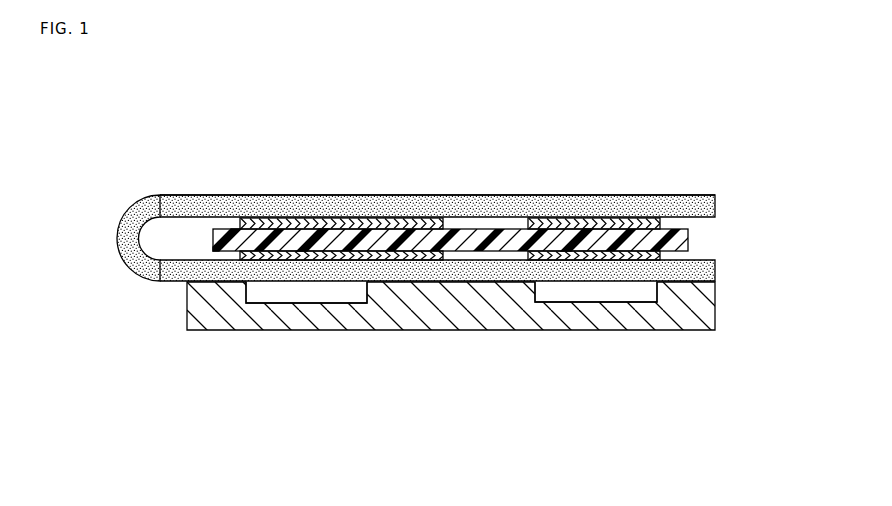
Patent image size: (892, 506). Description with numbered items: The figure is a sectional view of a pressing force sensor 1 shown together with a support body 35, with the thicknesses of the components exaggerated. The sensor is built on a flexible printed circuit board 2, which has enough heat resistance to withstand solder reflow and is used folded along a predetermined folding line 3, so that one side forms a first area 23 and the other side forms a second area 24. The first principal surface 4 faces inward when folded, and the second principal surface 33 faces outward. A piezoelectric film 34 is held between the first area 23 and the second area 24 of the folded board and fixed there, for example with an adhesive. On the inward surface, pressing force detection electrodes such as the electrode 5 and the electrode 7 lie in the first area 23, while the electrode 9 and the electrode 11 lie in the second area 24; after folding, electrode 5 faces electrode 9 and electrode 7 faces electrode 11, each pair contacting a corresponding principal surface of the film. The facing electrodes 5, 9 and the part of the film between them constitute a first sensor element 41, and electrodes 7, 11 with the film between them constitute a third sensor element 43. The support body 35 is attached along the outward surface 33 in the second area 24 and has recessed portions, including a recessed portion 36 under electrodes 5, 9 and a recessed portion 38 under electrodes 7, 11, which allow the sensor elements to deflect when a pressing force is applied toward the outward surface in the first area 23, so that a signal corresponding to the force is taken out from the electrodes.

The pressing force sensor 1 is at (196, 193).
The flexible printed circuit board 2 is at (806, 186).
The folding line 3 is at (116, 234).
The first principal surface 4 is at (443, 222).
The pressing force detection electrode 5 is at (572, 222).
The pressing force detection electrode 7 is at (331, 229).
The pressing force detection electrode 9 is at (570, 262).
The pressing force detection electrode 11 is at (337, 218).
The first area 23 is at (718, 203).
The second area 24 is at (718, 262).
The second principal surface 33 is at (512, 195).
The piezoelectric film 34 is at (216, 250).
The support body 35 is at (720, 308).
The recessed portion 36 is at (637, 297).
The recessed portion 38 is at (272, 296).
The first sensor element 41 is at (638, 212).
The third sensor element 43 is at (273, 214).